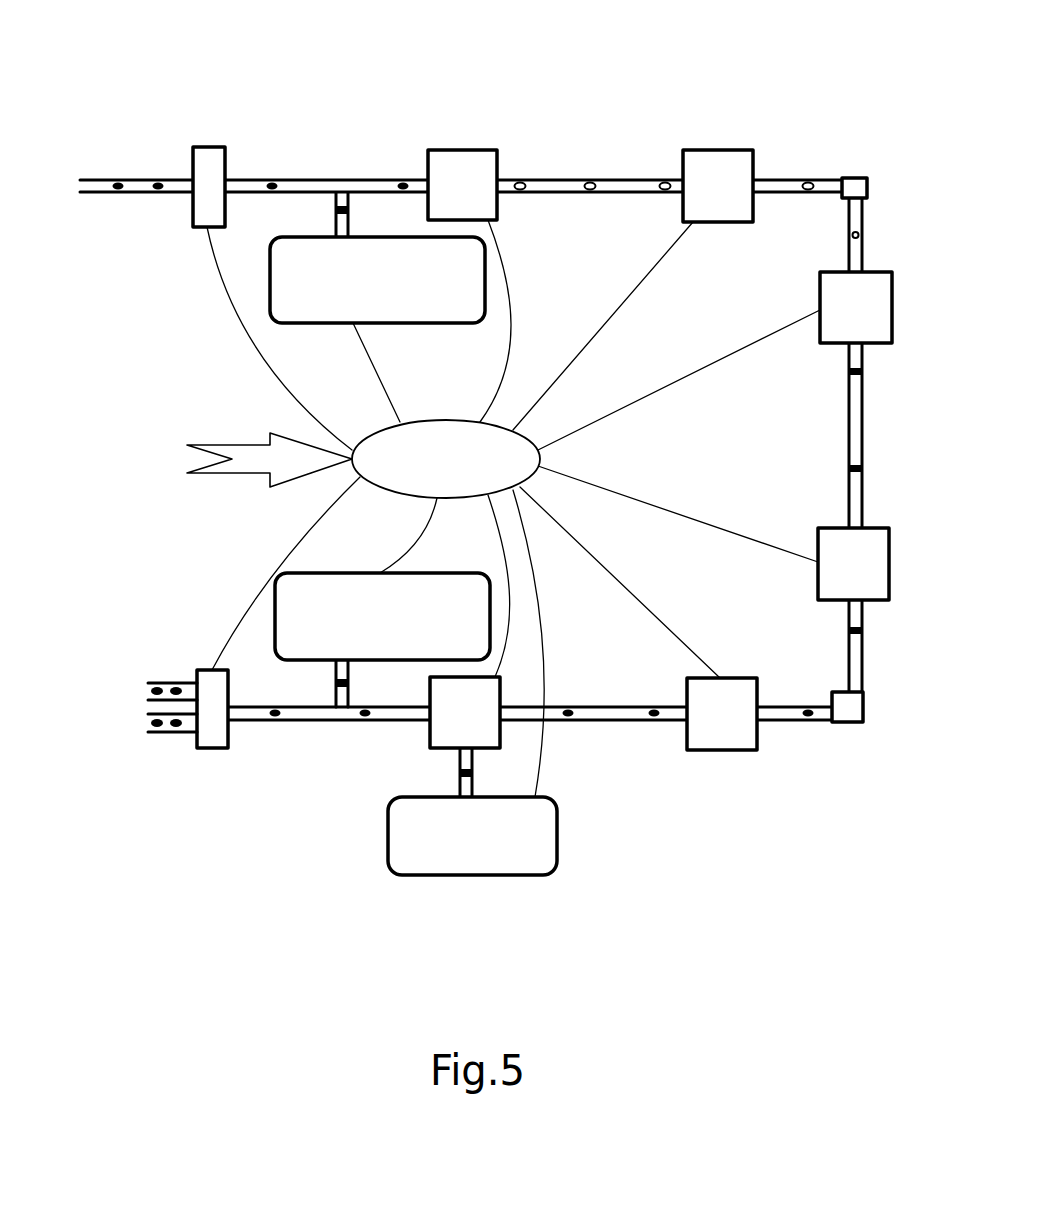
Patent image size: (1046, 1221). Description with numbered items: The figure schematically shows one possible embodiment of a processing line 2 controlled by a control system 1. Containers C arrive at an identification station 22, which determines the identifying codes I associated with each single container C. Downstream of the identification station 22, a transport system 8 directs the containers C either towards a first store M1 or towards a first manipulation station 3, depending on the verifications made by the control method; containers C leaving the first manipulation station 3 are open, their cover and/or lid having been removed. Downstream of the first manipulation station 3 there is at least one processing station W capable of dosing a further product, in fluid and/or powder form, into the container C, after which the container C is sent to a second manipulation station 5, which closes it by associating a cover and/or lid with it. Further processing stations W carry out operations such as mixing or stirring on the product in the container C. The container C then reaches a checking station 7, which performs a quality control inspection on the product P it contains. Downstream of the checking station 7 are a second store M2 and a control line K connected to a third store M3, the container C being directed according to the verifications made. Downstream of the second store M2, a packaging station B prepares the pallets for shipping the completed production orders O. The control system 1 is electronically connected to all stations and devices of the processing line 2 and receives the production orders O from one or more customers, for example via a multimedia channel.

The processing line 2 is at (192, 55).
The identification station 22 is at (206, 147).
The identifying codes I is at (157, 168).
The containers C is at (158, 196).
The transport system 8 is at (341, 178).
The first manipulation station 3 is at (462, 150).
The processing station W is at (732, 150).
The second manipulation station 5 is at (893, 300).
The control system 1 is at (446, 459).
The production orders O is at (269, 460).
The first store M1 is at (318, 324).
The second store M2 is at (345, 573).
The third store M3 is at (487, 876).
The checking station 7 is at (430, 740).
The control line K is at (458, 776).
The packaging station B is at (212, 749).
The product P is at (142, 700).